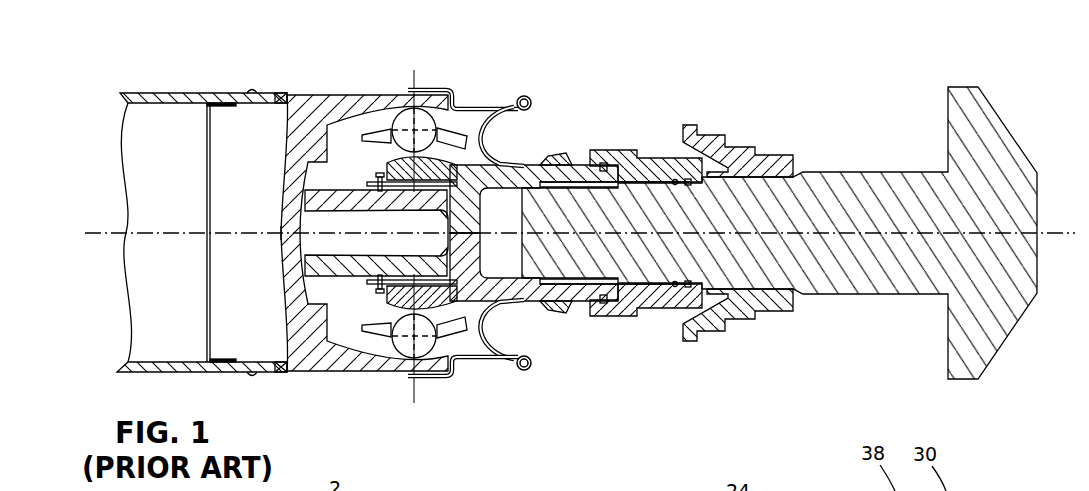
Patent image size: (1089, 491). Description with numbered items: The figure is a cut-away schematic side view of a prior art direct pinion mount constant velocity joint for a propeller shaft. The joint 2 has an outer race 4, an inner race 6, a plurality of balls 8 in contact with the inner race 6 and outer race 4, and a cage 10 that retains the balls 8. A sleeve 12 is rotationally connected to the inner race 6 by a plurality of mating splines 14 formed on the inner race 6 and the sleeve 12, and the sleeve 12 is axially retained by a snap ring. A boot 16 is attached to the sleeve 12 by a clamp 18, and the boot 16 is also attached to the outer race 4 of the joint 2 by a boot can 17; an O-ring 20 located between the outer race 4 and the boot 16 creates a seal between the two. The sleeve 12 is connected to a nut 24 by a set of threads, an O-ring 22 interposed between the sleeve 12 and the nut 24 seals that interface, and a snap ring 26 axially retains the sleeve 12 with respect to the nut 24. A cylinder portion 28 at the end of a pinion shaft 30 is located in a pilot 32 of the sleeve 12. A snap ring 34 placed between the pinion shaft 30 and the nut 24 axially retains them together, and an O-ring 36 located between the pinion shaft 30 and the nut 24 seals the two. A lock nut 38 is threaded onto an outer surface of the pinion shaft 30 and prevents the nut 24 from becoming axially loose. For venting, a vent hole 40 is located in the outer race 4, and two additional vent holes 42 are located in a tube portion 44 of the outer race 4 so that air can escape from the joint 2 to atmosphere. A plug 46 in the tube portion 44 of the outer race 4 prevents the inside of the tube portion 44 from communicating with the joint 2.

The joint 2 is at (193, 36).
The outer race 4 is at (320, 98).
The inner race 6 is at (378, 290).
The balls 8 is at (408, 352).
The cage 10 is at (380, 338).
The sleeve 12 is at (508, 175).
The mating splines 14 is at (390, 192).
The boot 16 is at (519, 98).
The boot can 17 is at (494, 106).
The clamp 18 is at (553, 312).
The O-ring 20 is at (440, 376).
The O-ring 22 is at (587, 303).
The nut 24 is at (650, 157).
The snap ring 26 is at (604, 299).
The cylinder portion 28 is at (528, 210).
The pinion shaft 30 is at (884, 172).
The pilot 32 is at (527, 285).
The snap ring 34 is at (666, 284).
The O-ring 36 is at (690, 181).
The lock nut 38 is at (778, 153).
The vent hole 40 is at (281, 232).
The vent holes 42 is at (282, 93).
The tube portion 44 is at (150, 93).
The plug 46 is at (206, 318).